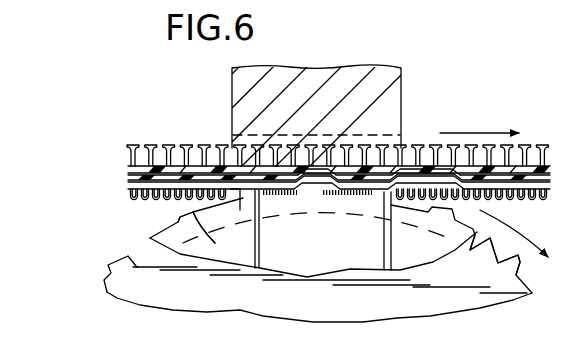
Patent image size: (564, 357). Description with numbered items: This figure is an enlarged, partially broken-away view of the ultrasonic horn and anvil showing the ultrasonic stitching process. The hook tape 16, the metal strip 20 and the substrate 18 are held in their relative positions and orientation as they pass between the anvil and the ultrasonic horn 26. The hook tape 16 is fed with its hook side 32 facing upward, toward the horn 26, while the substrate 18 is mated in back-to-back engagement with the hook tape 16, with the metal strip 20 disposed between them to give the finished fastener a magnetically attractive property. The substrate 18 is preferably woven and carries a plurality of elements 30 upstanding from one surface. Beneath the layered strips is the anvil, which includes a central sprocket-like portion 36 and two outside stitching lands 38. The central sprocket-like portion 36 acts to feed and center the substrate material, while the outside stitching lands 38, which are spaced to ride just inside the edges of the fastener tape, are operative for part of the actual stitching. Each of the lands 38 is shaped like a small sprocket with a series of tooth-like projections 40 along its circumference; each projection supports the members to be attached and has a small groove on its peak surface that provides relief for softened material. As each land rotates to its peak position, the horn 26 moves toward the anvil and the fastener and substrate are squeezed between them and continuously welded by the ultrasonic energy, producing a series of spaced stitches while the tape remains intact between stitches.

The hook tape 16 is at (134, 170).
The substrate 18 is at (134, 187).
The metal strip 20 is at (134, 179).
The horn 26 is at (401, 66).
The upstanding elements 30 is at (137, 203).
The hook side 32 is at (178, 160).
The central sprocket-like portion 36 is at (328, 248).
The outside stitching lands 38 is at (327, 309).
The tooth-like projections 40 is at (104, 281).